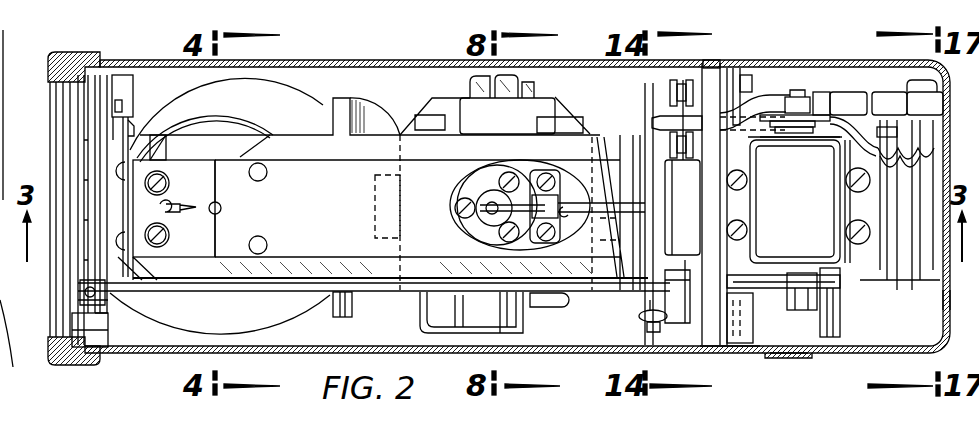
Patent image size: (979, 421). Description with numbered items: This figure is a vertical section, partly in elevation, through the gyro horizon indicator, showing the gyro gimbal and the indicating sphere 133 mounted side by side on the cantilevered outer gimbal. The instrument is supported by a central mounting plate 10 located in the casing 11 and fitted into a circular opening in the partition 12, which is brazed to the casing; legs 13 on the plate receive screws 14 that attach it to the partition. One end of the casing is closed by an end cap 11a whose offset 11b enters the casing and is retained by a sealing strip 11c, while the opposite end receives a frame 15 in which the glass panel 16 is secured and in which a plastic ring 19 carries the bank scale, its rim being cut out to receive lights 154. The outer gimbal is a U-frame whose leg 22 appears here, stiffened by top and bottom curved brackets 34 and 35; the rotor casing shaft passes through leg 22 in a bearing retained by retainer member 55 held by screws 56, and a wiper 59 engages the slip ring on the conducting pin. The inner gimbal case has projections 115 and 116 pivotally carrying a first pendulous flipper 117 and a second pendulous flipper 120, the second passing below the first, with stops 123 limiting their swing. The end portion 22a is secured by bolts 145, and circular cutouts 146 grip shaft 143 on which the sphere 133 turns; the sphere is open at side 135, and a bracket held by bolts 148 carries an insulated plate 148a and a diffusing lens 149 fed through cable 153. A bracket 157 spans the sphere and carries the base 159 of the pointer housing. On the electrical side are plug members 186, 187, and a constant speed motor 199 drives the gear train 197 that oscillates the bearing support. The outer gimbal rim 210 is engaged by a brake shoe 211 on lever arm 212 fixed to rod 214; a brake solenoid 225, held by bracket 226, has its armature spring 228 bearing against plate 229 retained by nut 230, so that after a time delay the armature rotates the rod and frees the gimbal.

The central mounting plate 10 is at (757, 354).
The casing 11 is at (383, 62).
The end cap 11a is at (945, 328).
The offset 11b is at (772, 354).
The sealing strip 11c is at (802, 355).
The partition 12 is at (716, 62).
The legs 13 is at (735, 70).
The screws 14 is at (748, 76).
The frame 15 is at (66, 362).
The glass panel 16 is at (62, 252).
The plastic ring 19 is at (98, 337).
The leg of outer gimbal 22 is at (390, 194).
The end portion of outer gimbal arm 22a is at (184, 208).
The top curved bracket 34 is at (368, 110).
The bottom curved bracket 35 is at (343, 318).
The retainer member 55 is at (462, 227).
The screws 56 is at (457, 206).
The wiper 59 is at (495, 196).
The first pair of projections 115 is at (437, 118).
The second pair of projections 116 is at (553, 118).
The first pendulous flipper 117 is at (458, 322).
The second pendulous flipper 120 is at (522, 333).
The stops 123 is at (536, 309).
The indicating sphere 133 is at (302, 102).
The open side of sphere 135 is at (236, 124).
The shaft 143 is at (222, 210).
The bolts 145 is at (128, 262).
The circular cutouts 146 is at (222, 207).
The bolts 148 is at (165, 186).
The insulated plate 148a is at (170, 153).
The diffusing lens 149 is at (166, 146).
The cable 153 is at (163, 211).
The lights 154 is at (88, 145).
The bracket 157 is at (128, 124).
The base 159 is at (118, 93).
The male plug member 186 is at (889, 100).
The female plug member 187 is at (853, 100).
The gear train 197 is at (678, 76).
The constant speed motor 199 is at (840, 325).
The circular rim 210 is at (647, 99).
The brake shoe 211 is at (645, 324).
The lever arm 212 is at (679, 323).
The rod 214 is at (290, 300).
The brake solenoid 225 is at (799, 200).
The bracket 226 is at (740, 176).
The spring 228 is at (813, 135).
The plate 229 is at (766, 114).
The nut 230 is at (802, 106).